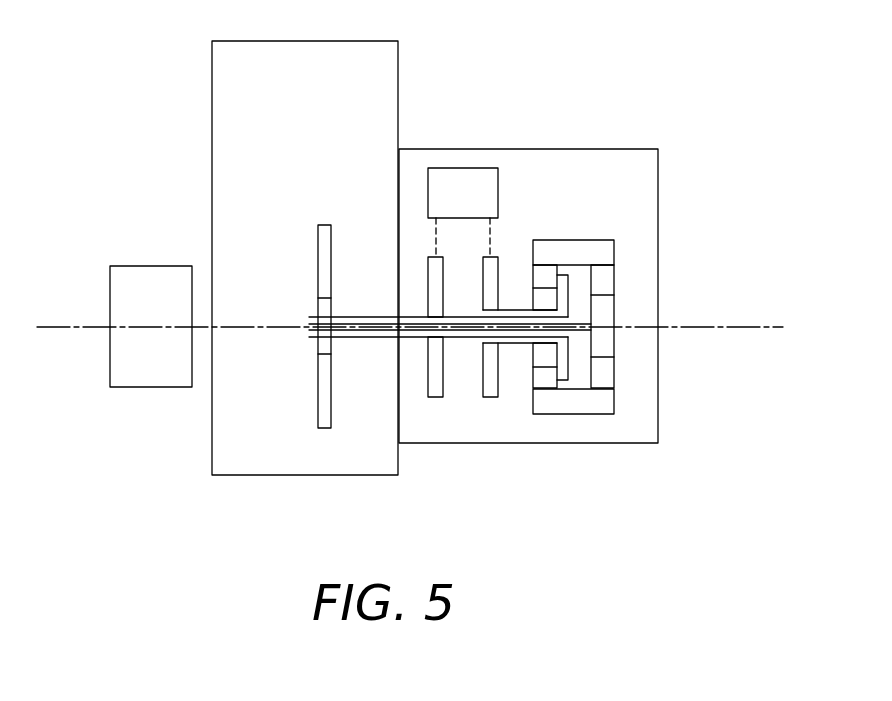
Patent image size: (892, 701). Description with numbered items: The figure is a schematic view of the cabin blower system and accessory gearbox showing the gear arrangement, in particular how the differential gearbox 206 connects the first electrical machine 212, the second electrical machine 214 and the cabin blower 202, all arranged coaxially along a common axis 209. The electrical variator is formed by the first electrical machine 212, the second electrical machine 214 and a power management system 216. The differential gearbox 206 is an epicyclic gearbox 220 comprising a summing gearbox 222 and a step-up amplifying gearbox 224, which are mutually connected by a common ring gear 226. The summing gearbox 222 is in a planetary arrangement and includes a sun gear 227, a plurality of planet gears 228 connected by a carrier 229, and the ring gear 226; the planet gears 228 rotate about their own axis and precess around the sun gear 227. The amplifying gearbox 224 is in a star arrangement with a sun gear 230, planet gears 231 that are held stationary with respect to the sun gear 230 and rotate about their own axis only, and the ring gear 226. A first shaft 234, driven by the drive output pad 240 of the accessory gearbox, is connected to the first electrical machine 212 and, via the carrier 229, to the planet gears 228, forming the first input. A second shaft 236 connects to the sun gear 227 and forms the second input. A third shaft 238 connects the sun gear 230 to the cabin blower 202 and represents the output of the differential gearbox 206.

The cabin blower 202 is at (172, 370).
The differential gearbox 206 is at (597, 222).
The common axis 209 is at (757, 325).
The first electrical machine 212 is at (435, 380).
The second electrical machine 214 is at (490, 272).
The power management system 216 is at (455, 183).
The epicyclic gearbox 220 is at (573, 401).
The summing gearbox 222 is at (530, 460).
The amplifying gearbox 224 is at (597, 455).
The ring gear 226 is at (600, 255).
The sun gear 227 is at (543, 350).
The planet gears 228 is at (543, 372).
The carrier 229 is at (572, 297).
The sun gear 230 is at (603, 310).
The planet gears 231 is at (603, 372).
The first shaft 234 is at (370, 336).
The second shaft 236 is at (515, 310).
The third shaft 238 is at (248, 328).
The drive output pad 240 is at (285, 274).